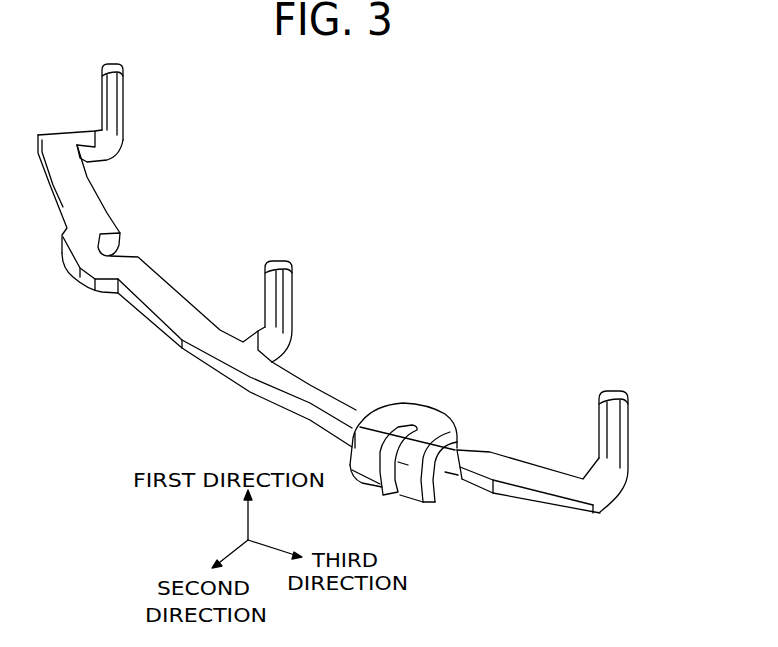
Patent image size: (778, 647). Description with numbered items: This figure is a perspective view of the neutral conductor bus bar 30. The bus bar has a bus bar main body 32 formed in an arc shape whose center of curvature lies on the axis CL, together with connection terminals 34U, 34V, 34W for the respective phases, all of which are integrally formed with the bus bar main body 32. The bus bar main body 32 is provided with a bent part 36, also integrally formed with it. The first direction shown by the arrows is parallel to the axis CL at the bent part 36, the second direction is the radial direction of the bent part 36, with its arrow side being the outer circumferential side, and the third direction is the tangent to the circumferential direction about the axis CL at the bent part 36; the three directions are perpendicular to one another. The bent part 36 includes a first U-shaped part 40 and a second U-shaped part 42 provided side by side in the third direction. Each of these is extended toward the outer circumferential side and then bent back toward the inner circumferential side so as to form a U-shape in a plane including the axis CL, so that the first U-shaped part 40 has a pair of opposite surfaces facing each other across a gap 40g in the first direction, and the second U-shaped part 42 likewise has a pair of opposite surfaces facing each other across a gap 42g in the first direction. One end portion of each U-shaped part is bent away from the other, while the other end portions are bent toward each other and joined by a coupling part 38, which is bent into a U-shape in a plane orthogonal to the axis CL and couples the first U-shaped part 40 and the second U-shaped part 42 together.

The neutral conductor bus bar 30 is at (311, 179).
The bus bar main body 32 is at (168, 300).
The connection terminal 34U is at (117, 105).
The connection terminal 34V is at (287, 302).
The connection terminal 34W is at (607, 425).
The bent part 36 is at (406, 393).
The coupling part 38 is at (425, 412).
The first U-shaped part 40 is at (389, 490).
The gap 40g is at (396, 462).
The second U-shaped part 42 is at (438, 492).
The gap 42g is at (443, 472).